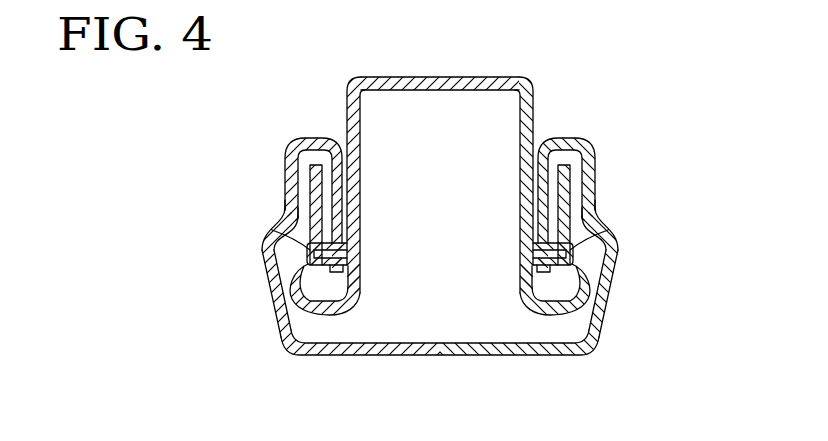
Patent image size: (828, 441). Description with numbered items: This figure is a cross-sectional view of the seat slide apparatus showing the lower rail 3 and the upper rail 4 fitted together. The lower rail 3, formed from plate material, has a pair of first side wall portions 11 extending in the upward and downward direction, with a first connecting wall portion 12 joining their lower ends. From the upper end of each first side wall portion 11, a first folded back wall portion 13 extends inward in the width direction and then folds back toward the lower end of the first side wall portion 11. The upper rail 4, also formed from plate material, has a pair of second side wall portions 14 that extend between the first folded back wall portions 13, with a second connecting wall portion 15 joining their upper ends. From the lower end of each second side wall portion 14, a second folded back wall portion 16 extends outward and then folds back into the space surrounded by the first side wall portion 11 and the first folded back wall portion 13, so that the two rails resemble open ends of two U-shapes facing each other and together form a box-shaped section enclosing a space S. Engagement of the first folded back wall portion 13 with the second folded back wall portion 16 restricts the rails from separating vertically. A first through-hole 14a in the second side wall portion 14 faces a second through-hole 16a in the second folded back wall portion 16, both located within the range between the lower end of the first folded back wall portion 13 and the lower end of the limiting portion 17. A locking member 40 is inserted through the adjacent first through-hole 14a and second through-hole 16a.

The lower rail 3 is at (444, 305).
The upper rail 4 is at (443, 187).
The first side wall portion 11 is at (263, 271).
The first connecting wall portion 12 is at (429, 357).
The first folded back wall portion 13 is at (338, 181).
The second side wall portion 14 is at (352, 113).
The first through-hole 14a is at (360, 250).
The second connecting wall portion 15 is at (443, 77).
The second folded back wall portion 16 is at (300, 190).
The second through-hole 16a is at (292, 226).
The limiting portion 17 is at (361, 296).
The locking member 40 is at (266, 243).
The space S is at (431, 301).